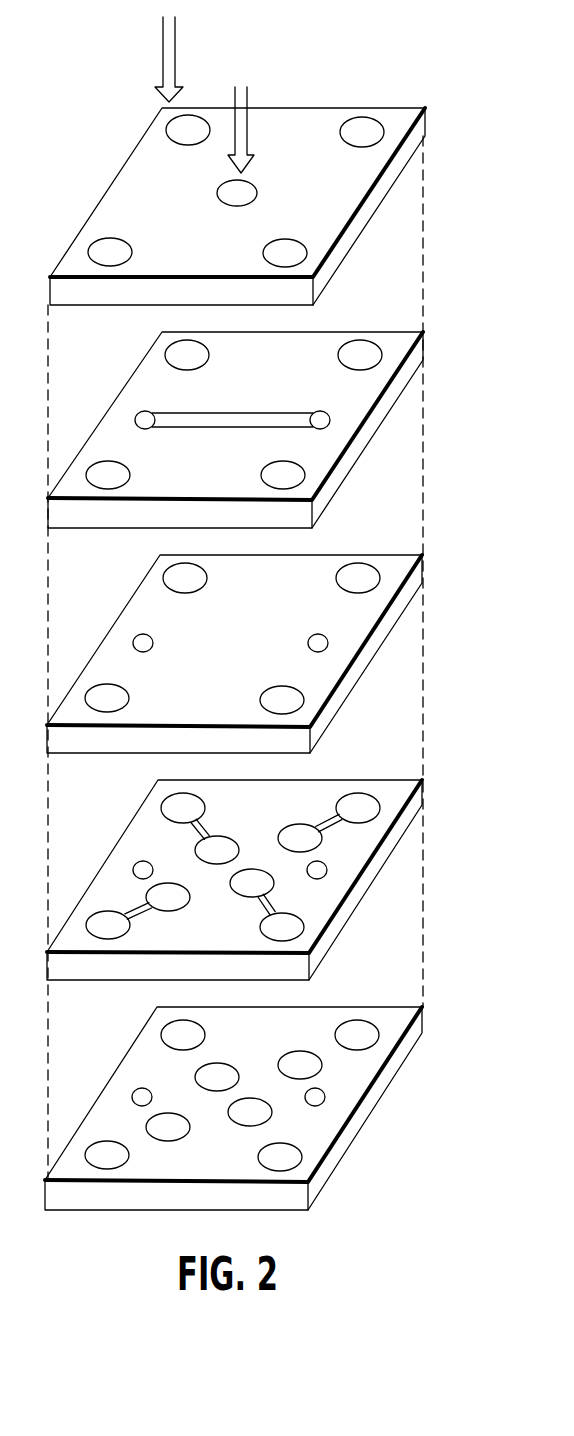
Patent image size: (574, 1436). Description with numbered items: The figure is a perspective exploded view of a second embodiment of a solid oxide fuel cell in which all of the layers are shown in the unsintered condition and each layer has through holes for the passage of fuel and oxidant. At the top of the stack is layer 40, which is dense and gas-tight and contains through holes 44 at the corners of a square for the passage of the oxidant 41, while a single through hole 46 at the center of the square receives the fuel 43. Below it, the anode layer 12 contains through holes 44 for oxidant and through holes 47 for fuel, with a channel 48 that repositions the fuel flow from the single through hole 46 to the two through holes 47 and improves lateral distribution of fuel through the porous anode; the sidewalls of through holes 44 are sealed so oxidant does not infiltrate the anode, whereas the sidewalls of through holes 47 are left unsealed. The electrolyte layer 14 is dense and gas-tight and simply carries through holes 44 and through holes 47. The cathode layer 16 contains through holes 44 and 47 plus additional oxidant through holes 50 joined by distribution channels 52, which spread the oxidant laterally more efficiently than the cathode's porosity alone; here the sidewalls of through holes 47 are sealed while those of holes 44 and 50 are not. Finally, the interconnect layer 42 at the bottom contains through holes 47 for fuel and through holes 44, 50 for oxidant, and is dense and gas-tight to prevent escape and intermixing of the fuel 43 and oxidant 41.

The anode layer 12 is at (418, 353).
The electrolyte layer 14 is at (417, 578).
The cathode layer 16 is at (417, 803).
The layer 40 is at (420, 128).
The oxidant 41 is at (173, 23).
The interconnect layer 42 is at (415, 1028).
The fuel 43 is at (240, 93).
The through holes 44 is at (175, 127).
The through hole 46 is at (257, 185).
The through holes 47 is at (145, 420).
The channel 48 is at (238, 422).
The additional oxidant through holes 50 is at (285, 832).
The distribution channels 52 is at (327, 827).